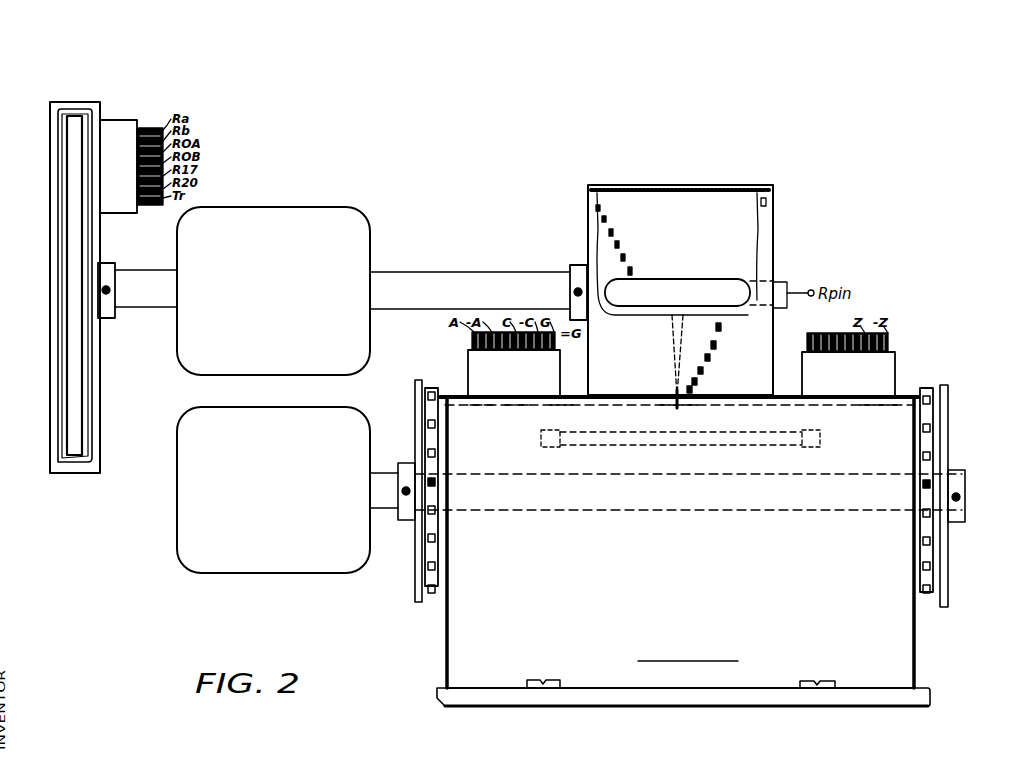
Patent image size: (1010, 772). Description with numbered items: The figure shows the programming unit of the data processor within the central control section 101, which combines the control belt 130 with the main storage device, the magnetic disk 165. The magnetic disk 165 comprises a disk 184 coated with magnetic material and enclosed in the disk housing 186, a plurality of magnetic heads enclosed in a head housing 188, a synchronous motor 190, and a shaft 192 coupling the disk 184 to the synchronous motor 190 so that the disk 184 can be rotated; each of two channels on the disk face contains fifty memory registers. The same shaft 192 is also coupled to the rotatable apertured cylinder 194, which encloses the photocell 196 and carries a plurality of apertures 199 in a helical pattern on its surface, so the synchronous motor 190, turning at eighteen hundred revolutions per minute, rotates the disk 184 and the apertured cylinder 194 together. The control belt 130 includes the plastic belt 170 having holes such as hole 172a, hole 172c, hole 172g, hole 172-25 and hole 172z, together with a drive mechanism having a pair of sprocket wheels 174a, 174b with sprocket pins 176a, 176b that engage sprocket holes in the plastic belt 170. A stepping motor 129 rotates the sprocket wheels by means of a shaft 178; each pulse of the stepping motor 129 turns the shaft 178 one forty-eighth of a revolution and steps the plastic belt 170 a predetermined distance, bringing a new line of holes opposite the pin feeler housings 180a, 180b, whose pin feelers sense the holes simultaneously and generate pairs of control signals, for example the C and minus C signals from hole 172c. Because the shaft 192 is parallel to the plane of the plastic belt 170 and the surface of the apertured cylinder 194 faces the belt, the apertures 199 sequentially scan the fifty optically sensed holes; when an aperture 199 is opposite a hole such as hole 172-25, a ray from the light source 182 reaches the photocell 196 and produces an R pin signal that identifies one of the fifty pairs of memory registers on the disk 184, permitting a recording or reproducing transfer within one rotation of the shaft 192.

The magnetic disk 165 is at (195, 64).
The disk housing 186 is at (57, 233).
The disk 184 is at (72, 381).
The head housing 188 is at (117, 128).
The shaft 192 is at (139, 308).
The synchronous motor 190 is at (262, 316).
The stepping motor 129 is at (262, 497).
The shaft 178 is at (387, 511).
The control belt 130 is at (770, 154).
The apertures 199 is at (606, 219).
The photocell 196 is at (690, 303).
The apertured cylinder 194 is at (633, 369).
The pin feeler housing 180a is at (530, 383).
The pin feeler housing 180b is at (866, 385).
The plastic belt 170 is at (905, 396).
The central control section 101 is at (410, 656).
The sprocket wheel 174a is at (414, 591).
The sprocket pins 176a is at (432, 596).
The sprocket wheel 174b is at (946, 549).
The sprocket pins 176b is at (929, 598).
The light source 182 is at (784, 445).
The hole 172a is at (478, 400).
The hole 172c is at (512, 400).
The hole 172g is at (556, 400).
The hole 172-25 is at (680, 400).
The hole 172z is at (880, 400).